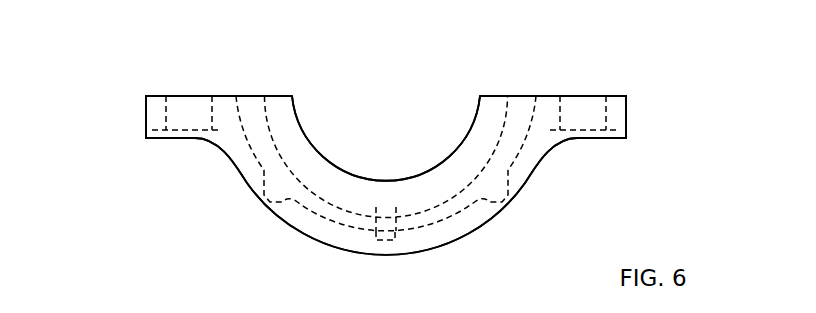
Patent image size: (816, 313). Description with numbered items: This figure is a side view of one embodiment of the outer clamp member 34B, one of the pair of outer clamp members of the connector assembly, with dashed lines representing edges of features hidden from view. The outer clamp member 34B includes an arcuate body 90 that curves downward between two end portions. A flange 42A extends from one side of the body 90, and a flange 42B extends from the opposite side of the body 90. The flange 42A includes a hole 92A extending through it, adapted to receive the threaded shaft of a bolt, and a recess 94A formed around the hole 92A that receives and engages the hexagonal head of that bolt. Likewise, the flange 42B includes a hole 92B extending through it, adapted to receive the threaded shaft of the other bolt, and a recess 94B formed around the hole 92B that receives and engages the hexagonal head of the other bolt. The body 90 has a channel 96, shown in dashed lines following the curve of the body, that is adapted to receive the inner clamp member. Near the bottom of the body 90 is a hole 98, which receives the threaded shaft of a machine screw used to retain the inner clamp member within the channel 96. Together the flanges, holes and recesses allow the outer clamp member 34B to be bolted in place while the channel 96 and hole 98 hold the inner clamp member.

The outer clamp member 34B is at (662, 50).
The flange 42A is at (626, 118).
The flange 42B is at (146, 118).
The arcuate body 90 is at (500, 212).
The hole 92A is at (589, 152).
The hole 92B is at (190, 150).
The recess 94A is at (607, 157).
The recess 94B is at (163, 157).
The channel 96 is at (271, 74).
The hole 98 is at (387, 268).